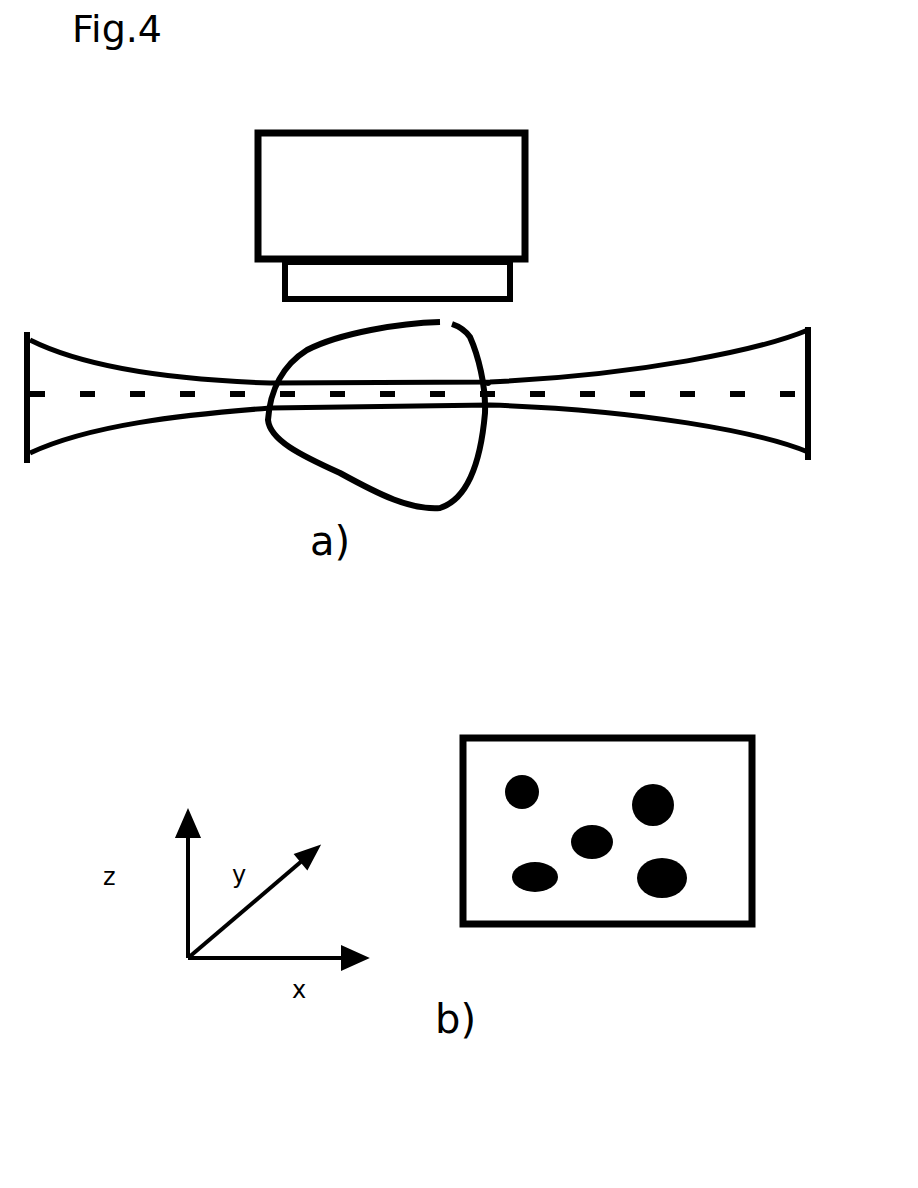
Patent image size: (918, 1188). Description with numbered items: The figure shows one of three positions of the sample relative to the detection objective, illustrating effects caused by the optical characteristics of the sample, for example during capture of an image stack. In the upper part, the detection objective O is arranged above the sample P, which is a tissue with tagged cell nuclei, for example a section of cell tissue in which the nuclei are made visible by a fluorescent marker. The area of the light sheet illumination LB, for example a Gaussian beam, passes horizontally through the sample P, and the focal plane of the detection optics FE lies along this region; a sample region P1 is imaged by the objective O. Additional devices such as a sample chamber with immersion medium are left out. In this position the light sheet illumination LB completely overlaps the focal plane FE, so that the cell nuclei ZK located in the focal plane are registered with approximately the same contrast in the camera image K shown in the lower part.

The detection objective O is at (391, 171).
The area of the light sheet illumination LB is at (417, 399).
The focal plane of the detection optics FE is at (83, 400).
The sample P is at (376, 415).
The sample region P1 is at (492, 382).
The camera image K is at (637, 831).
The cell nuclei ZK is at (647, 893).